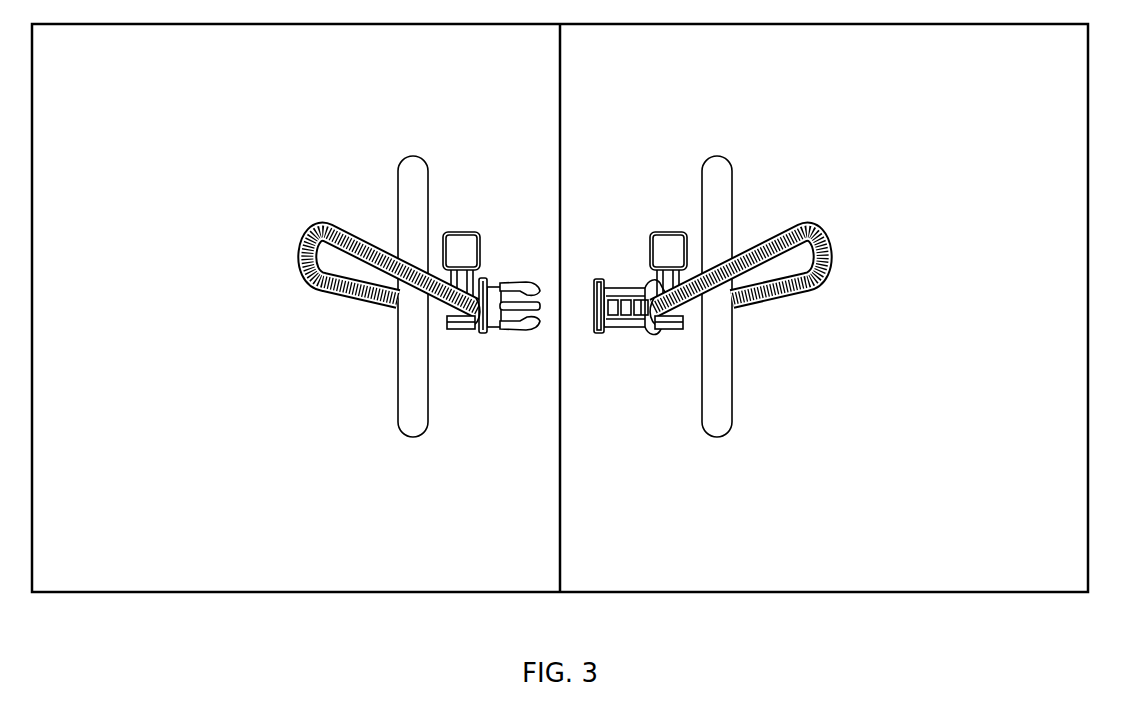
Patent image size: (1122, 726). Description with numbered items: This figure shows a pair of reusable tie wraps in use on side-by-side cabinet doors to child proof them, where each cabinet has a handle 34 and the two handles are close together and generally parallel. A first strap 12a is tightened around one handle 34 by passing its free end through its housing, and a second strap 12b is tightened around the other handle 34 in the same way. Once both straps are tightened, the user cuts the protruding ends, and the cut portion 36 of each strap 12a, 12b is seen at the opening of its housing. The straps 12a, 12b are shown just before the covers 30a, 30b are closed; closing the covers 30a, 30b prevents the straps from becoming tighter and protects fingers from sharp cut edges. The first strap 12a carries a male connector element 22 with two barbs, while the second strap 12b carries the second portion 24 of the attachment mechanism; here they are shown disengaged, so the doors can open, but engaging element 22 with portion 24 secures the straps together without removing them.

The first strap 12a is at (320, 292).
The second strap 12b is at (790, 299).
The male connector element 22 is at (503, 327).
The second portion of the attachment mechanism 24 is at (627, 322).
The cover 30a is at (462, 244).
The cover 30b is at (670, 244).
The handle 34 is at (413, 414).
The cut portion 36 is at (470, 313).